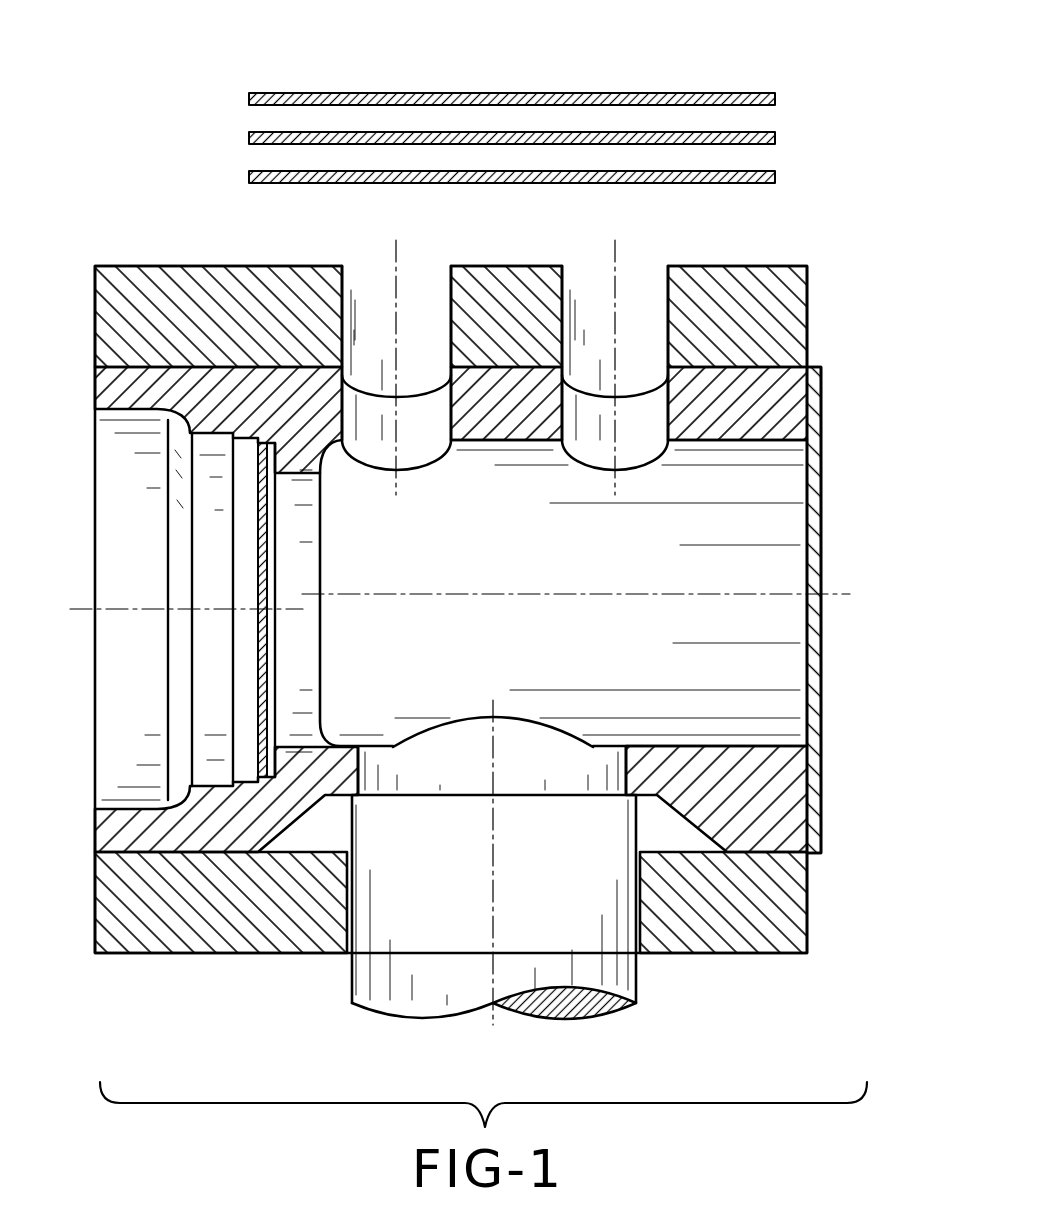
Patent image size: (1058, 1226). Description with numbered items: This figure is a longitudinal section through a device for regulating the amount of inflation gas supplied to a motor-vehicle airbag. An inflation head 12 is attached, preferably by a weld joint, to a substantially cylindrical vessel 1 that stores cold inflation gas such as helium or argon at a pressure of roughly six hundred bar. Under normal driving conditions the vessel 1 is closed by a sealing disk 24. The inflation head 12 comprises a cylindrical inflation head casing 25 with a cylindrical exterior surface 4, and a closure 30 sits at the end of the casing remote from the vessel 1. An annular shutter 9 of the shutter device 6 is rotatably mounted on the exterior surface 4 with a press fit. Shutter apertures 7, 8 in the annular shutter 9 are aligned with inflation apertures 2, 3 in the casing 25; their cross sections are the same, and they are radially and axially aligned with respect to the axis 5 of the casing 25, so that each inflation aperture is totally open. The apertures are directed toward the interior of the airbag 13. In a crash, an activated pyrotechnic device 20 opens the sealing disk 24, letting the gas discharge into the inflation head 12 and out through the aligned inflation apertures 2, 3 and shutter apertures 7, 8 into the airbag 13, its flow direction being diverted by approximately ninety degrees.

The vessel 1 is at (140, 688).
The inflation aperture 2 is at (358, 414).
The inflation aperture 3 is at (577, 414).
The cylindrical exterior surface 4 is at (725, 365).
The axis 5 is at (761, 593).
The shutter device 6 is at (806, 246).
The shutter aperture 7 is at (427, 303).
The shutter aperture 8 is at (642, 302).
The annular shutter 9 is at (749, 919).
The inflation head 12 is at (748, 665).
The airbag 13 is at (672, 90).
The pyrotechnic device 20 is at (427, 952).
The sealing disk 24 is at (262, 670).
The inflation head casing 25 is at (789, 410).
The closure 30 is at (824, 727).